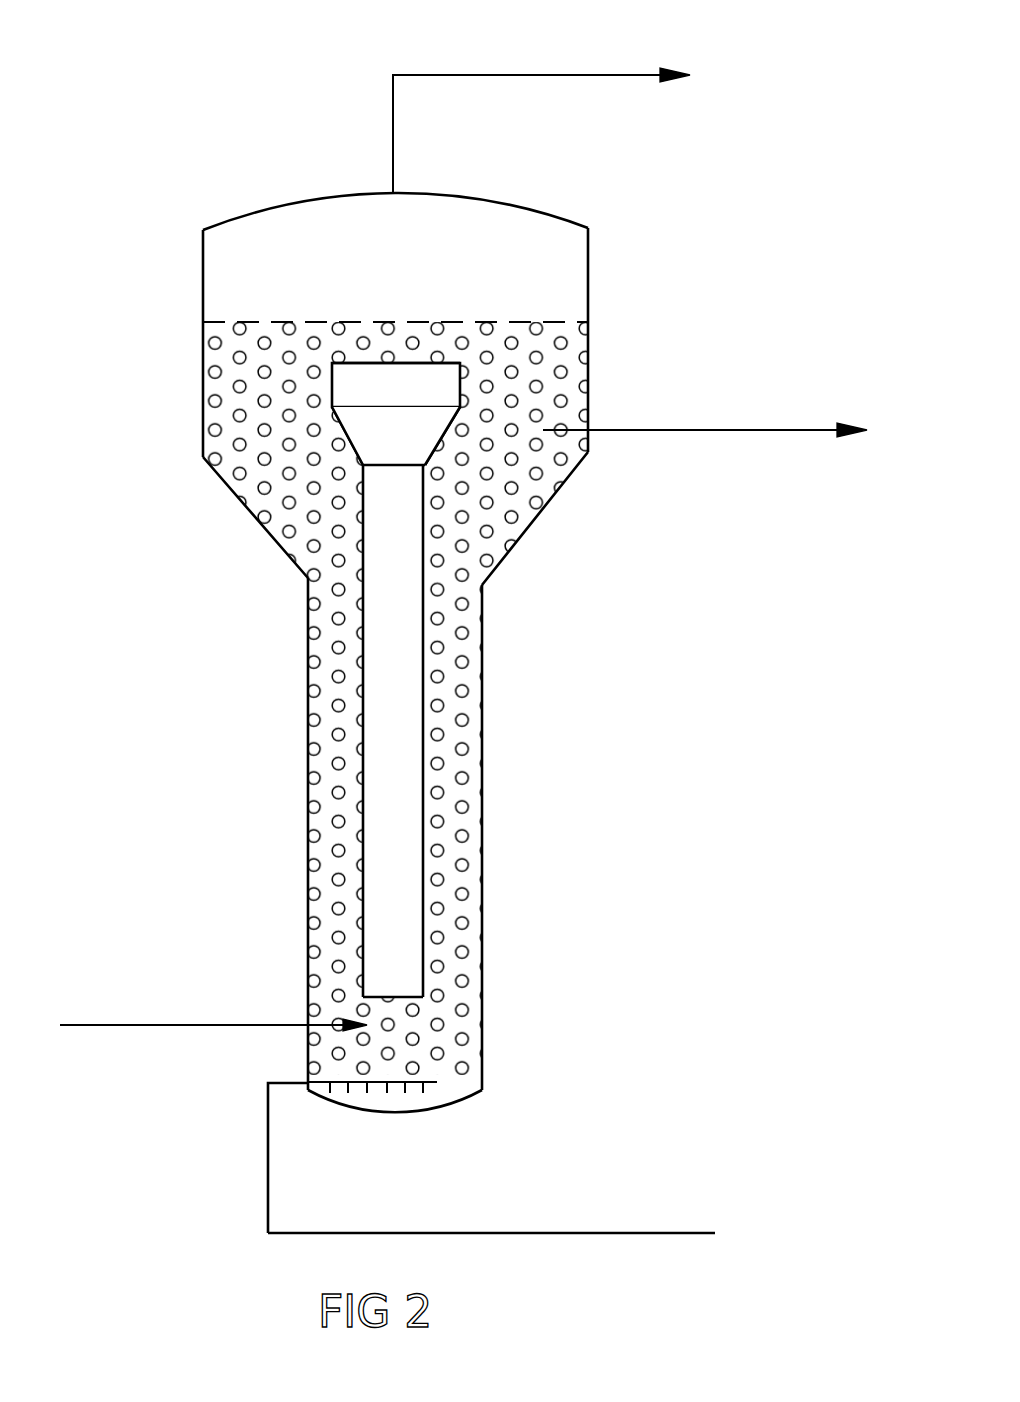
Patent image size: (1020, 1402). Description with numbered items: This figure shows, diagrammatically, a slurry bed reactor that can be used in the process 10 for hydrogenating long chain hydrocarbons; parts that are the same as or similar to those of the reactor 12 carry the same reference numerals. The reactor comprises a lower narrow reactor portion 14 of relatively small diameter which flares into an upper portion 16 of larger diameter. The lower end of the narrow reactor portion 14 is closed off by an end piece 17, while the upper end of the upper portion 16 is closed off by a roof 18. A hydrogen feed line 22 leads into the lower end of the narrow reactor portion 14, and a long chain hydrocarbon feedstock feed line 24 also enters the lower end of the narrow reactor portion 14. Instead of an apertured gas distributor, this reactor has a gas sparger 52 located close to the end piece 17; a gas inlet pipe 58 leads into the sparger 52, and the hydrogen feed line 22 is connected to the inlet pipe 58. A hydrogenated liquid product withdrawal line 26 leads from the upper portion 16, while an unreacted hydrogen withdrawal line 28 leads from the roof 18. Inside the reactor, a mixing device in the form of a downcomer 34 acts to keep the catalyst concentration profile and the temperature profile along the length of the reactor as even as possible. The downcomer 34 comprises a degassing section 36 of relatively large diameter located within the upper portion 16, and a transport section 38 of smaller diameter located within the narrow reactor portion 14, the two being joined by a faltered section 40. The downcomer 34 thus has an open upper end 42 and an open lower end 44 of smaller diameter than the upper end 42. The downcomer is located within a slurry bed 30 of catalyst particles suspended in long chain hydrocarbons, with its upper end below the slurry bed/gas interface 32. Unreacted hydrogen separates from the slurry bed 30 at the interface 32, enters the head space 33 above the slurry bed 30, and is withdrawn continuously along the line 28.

The process 10 is at (762, 258).
The reactor 12 is at (462, 777).
The lower narrow reactor portion 14 is at (482, 827).
The upper portion 16 is at (590, 298).
The end piece 17 is at (443, 1105).
The roof 18 is at (525, 208).
The hydrogen feed line 22 is at (573, 1233).
The long chain hydrocarbon feedstock feed line 24 is at (193, 1025).
The hydrogenated liquid product withdrawal line 26 is at (723, 428).
The unreacted hydrogen withdrawal line 28 is at (605, 75).
The slurry bed 30 is at (470, 682).
The slurry bed/gas interface 32 is at (500, 322).
The head space 33 is at (328, 218).
The downcomer 34 is at (452, 483).
The degassing section 36 is at (447, 392).
The transport section 38 is at (408, 760).
The faltered section 40 is at (443, 430).
The open upper end 42 is at (375, 363).
The open lower end 44 is at (410, 998).
The gas sparger 52 is at (348, 1112).
The gas inlet pipe 58 is at (287, 1083).